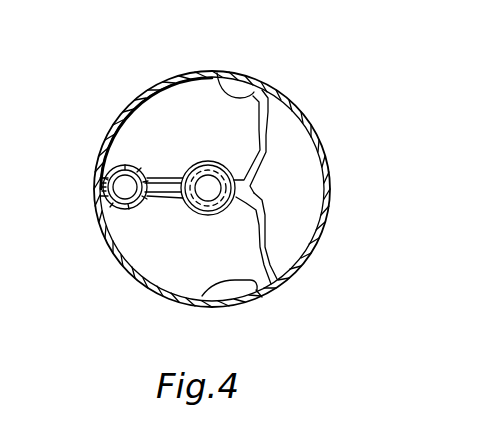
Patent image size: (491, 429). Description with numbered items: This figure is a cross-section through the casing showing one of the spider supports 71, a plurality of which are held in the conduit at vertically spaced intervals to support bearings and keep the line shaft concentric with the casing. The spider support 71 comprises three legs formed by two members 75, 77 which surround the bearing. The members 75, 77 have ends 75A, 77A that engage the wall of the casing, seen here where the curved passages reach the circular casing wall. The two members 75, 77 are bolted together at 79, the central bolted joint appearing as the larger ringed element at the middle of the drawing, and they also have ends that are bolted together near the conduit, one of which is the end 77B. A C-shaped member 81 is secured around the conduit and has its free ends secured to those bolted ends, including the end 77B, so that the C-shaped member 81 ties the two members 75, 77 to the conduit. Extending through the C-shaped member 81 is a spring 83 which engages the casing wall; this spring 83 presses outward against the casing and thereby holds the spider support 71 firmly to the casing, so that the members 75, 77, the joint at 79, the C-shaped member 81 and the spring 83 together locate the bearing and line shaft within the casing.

The spider support 71 is at (187, 107).
The member 75 is at (272, 135).
The end of member 75A is at (211, 72).
The member 77 is at (283, 247).
The end of member 77A is at (220, 290).
The end of member 77B is at (157, 187).
The bolted connection 79 is at (257, 189).
The C-shaped member 81 is at (113, 206).
The spring 83 is at (95, 162).